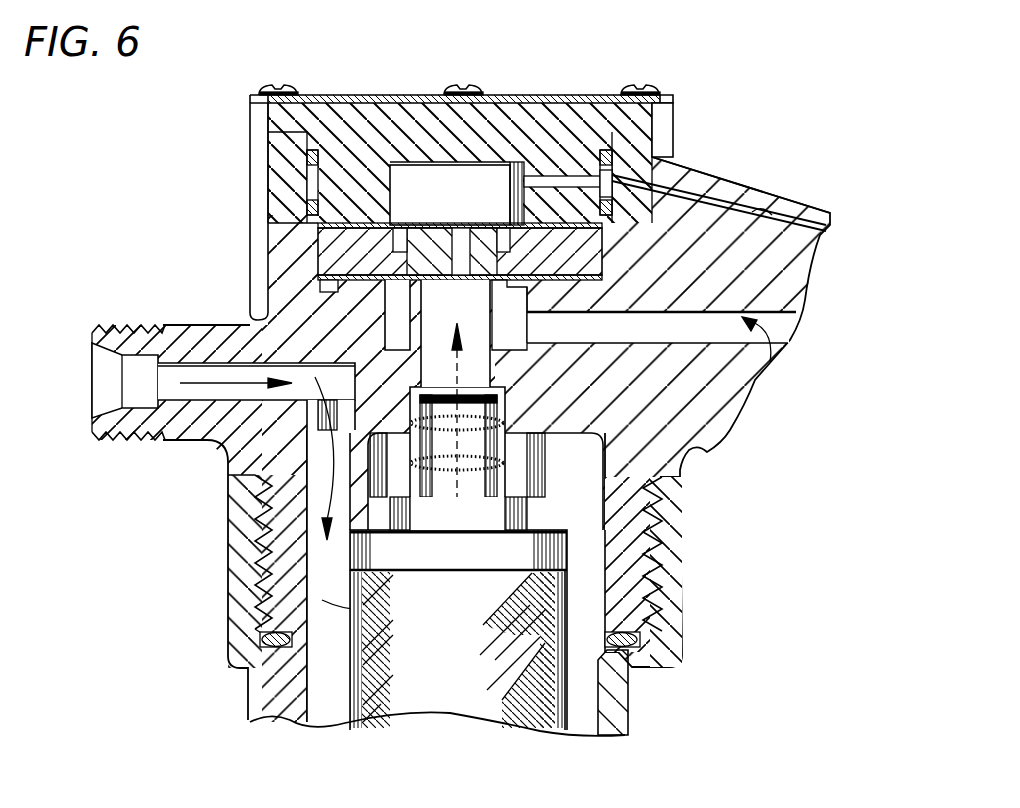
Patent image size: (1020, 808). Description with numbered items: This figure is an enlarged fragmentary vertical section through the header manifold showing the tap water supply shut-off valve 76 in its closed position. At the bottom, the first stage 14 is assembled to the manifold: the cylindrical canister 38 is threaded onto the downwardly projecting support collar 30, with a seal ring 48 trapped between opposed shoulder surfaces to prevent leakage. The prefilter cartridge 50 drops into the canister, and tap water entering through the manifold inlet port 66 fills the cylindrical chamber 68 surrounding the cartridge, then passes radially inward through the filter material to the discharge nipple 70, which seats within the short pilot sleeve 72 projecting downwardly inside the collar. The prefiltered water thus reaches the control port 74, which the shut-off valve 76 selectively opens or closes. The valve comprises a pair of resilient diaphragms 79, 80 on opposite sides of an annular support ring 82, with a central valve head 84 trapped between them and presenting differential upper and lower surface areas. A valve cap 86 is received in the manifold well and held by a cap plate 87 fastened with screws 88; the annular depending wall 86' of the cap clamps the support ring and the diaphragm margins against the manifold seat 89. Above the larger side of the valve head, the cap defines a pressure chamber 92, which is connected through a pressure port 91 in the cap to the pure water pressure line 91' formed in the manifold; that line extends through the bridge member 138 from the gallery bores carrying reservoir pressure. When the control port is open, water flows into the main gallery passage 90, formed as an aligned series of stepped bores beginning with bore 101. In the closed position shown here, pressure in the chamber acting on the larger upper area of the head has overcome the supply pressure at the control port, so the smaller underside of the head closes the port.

The first stage 14 is at (427, 690).
The support collar 30 is at (638, 589).
The cylindrical canister 38 is at (623, 689).
The seal ring 48 is at (292, 647).
The prefilter cartridge 50 is at (454, 702).
The manifold inlet port 66 is at (95, 426).
The cylindrical chamber 68 is at (337, 700).
The discharge nipple 70 is at (490, 441).
The pilot sleeve 72 is at (517, 475).
The control port 74 is at (427, 294).
The shut-off valve 76 is at (493, 118).
The diaphragm 79 is at (560, 250).
The diaphragm 80 is at (540, 217).
The annular support ring 82 is at (332, 228).
The valve head 84 is at (424, 234).
The valve cap 86 is at (460, 130).
The annular depending wall 86' is at (406, 182).
The cap plate 87 is at (546, 103).
The screws 88 is at (642, 92).
The manifold seat 89 is at (363, 272).
The main gallery passage 90 is at (770, 362).
The pressure port 91 is at (675, 139).
The pure water pressure line 91' is at (783, 178).
The pressure chamber 92 is at (398, 103).
The stepped bore 101 is at (660, 343).
The bridge member 138 is at (722, 180).